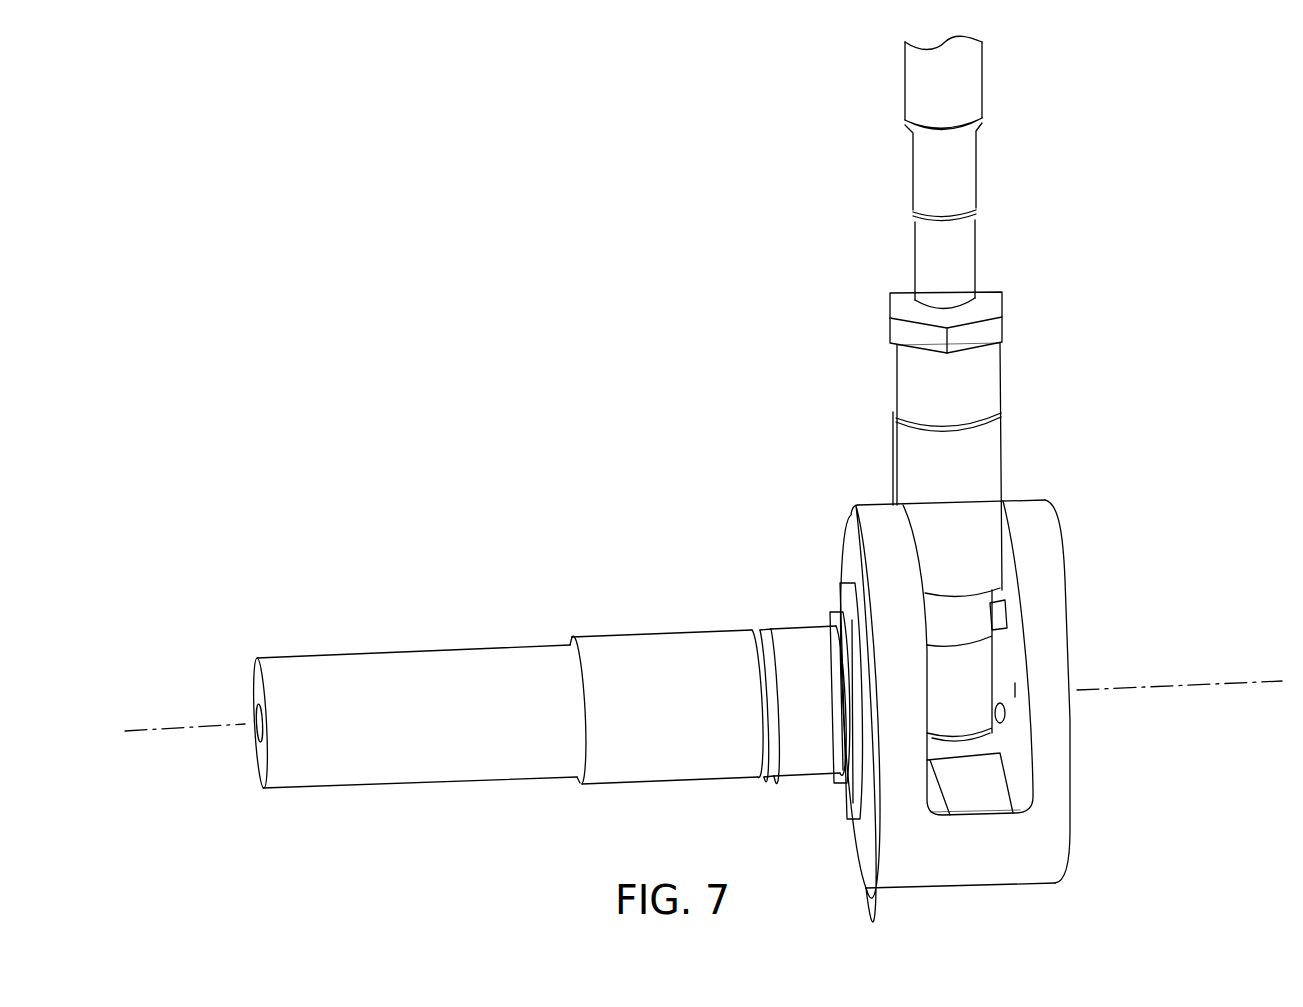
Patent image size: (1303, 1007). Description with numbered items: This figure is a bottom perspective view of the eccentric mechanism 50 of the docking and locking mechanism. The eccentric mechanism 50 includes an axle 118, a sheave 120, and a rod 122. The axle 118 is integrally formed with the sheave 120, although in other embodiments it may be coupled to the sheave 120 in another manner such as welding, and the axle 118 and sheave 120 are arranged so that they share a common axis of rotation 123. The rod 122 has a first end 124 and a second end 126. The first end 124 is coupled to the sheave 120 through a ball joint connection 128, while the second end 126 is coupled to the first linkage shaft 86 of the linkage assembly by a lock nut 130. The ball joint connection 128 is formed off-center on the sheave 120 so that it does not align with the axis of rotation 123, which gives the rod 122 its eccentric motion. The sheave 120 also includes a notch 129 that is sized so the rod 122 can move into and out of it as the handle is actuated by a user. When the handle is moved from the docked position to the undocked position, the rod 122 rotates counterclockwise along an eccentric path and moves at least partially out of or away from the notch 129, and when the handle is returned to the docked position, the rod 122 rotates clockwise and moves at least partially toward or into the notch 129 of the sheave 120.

The eccentric mechanism 50 is at (670, 547).
The first linkage shaft 86 is at (960, 95).
The axle 118 is at (407, 686).
The sheave 120 is at (1050, 826).
The rod 122 is at (985, 459).
The axis of rotation 123 is at (1220, 684).
The first end 124 is at (960, 735).
The second end 126 is at (876, 384).
The ball joint connection 128 is at (1011, 652).
The notch 129 is at (981, 816).
The lock nut 130 is at (985, 333).